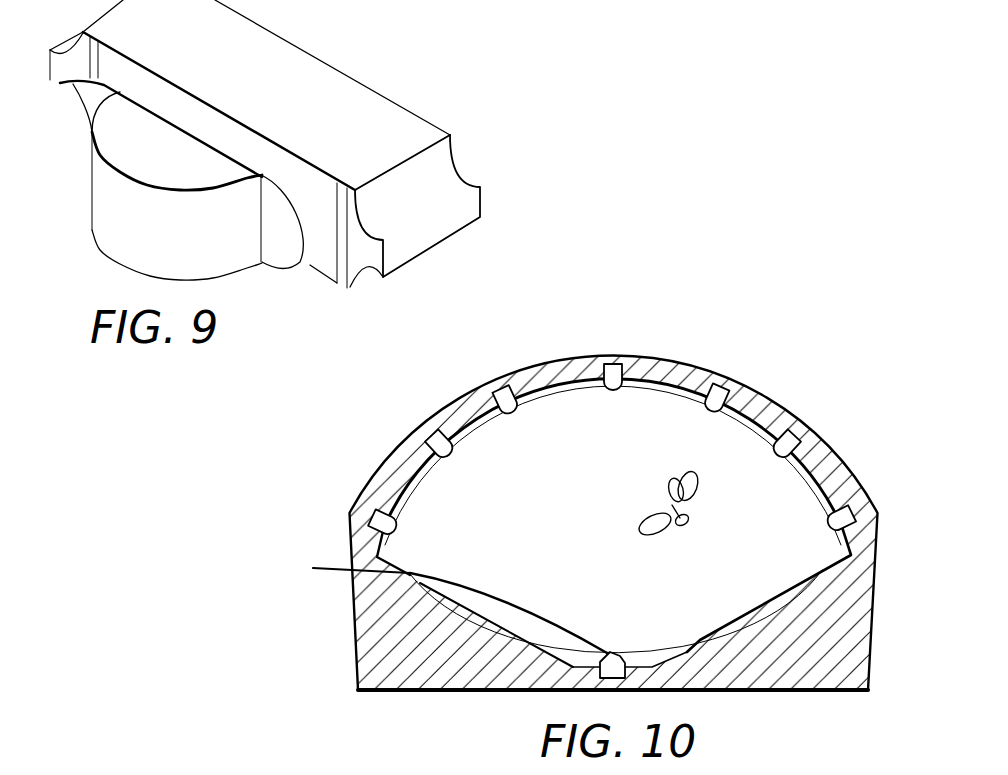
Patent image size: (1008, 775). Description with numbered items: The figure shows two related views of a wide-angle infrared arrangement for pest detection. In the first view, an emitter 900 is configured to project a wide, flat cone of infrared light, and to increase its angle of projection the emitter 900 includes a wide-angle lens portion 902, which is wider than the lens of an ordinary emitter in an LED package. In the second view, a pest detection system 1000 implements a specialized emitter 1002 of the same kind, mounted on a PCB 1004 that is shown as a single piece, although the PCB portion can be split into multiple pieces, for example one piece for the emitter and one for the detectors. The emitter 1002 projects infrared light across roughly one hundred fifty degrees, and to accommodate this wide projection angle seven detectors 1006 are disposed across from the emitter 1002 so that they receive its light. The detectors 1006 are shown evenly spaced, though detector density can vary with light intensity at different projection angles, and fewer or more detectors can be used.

In FIG. 9, the emitter 900 is at (393, 73).
In FIG. 9, the wide-angle lens portion 902 is at (120, 247).
In FIG. 10, the pest detection system 1000 is at (553, 486).
In FIG. 10, the emitter 1002 is at (441, 619).
In FIG. 10, the PCB 1004 is at (360, 648).
In FIG. 10, the detectors 1006 is at (507, 395).